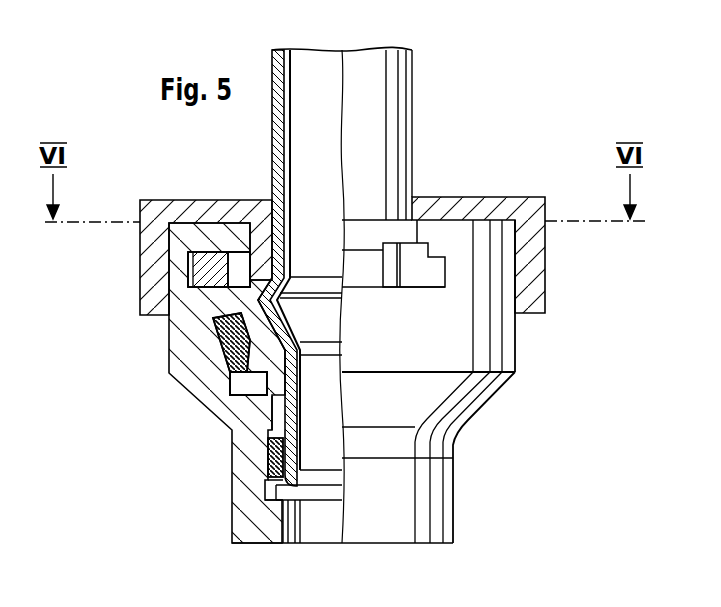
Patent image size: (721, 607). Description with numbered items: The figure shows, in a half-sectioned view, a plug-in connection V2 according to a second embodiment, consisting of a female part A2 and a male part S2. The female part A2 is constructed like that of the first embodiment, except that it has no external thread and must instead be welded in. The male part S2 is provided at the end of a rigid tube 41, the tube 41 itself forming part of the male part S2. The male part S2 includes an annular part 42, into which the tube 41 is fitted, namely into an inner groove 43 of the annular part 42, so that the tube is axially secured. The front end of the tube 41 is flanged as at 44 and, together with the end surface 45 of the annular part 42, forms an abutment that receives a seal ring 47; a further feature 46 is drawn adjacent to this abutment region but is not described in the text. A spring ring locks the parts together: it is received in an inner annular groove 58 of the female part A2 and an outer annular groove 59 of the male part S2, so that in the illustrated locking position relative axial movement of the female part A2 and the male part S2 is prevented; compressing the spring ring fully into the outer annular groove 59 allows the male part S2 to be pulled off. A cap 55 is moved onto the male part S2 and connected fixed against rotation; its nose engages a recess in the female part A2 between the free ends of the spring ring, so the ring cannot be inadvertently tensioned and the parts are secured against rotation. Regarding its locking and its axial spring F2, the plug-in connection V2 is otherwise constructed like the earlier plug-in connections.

The rigid tube 41 is at (413, 70).
The cap 55 is at (160, 205).
The annular part 42 is at (220, 250).
The outer annular groove 59 is at (238, 256).
The inner annular groove 58 is at (190, 268).
The inner groove 43 is at (213, 322).
The end surface 45 is at (275, 425).
The seal ring 47 is at (270, 458).
The shoulder 46 is at (265, 470).
The flanged front end 44 is at (296, 505).
The axial spring F2 is at (215, 350).
The male part S2 is at (433, 149).
The plug-in connection V2 is at (551, 52).
The female part A2 is at (512, 402).